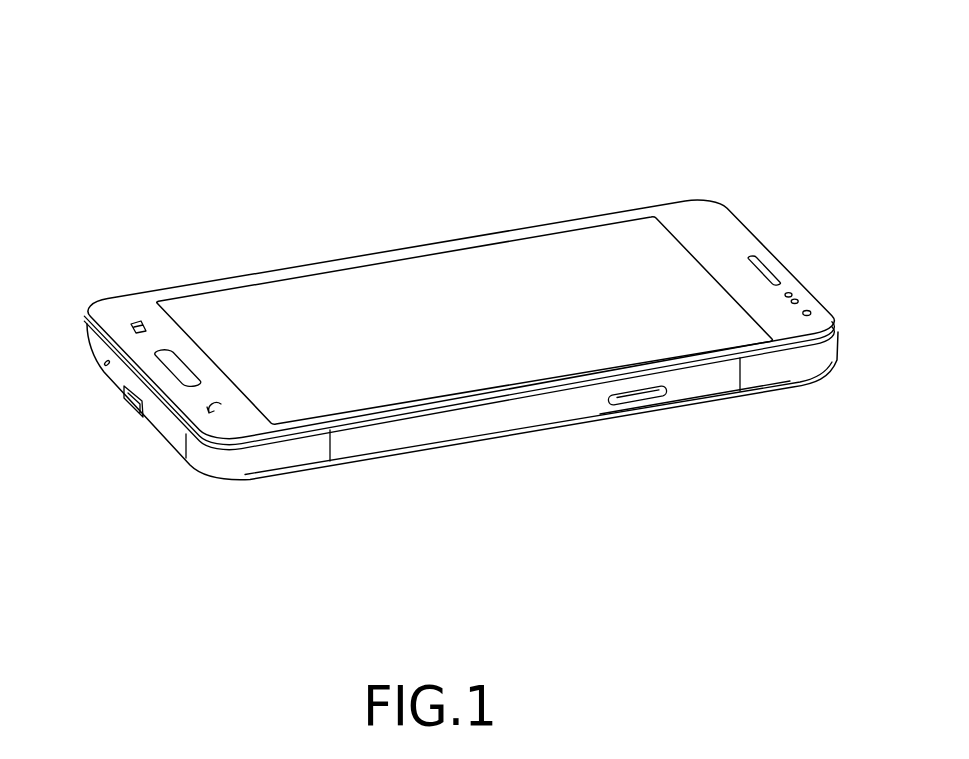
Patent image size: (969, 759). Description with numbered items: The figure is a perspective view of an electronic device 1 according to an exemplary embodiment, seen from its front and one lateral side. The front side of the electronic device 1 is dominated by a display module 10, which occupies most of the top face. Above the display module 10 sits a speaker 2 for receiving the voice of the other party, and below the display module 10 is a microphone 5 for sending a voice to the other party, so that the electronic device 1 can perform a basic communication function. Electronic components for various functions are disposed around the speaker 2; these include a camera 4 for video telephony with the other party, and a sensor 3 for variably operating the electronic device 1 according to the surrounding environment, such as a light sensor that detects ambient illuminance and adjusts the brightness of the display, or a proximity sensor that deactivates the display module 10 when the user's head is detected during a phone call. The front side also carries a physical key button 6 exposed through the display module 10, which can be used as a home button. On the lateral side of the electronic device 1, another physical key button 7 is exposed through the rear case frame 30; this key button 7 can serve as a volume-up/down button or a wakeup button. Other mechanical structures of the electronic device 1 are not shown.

The electronic device 1 is at (518, 147).
The speaker 2 is at (765, 273).
The sensor 3 is at (796, 299).
The camera 4 is at (807, 311).
The microphone 5 is at (105, 366).
The key button 6 is at (178, 363).
The key button 7 is at (633, 399).
The display module 10 is at (421, 286).
The rear case frame 30 is at (733, 397).